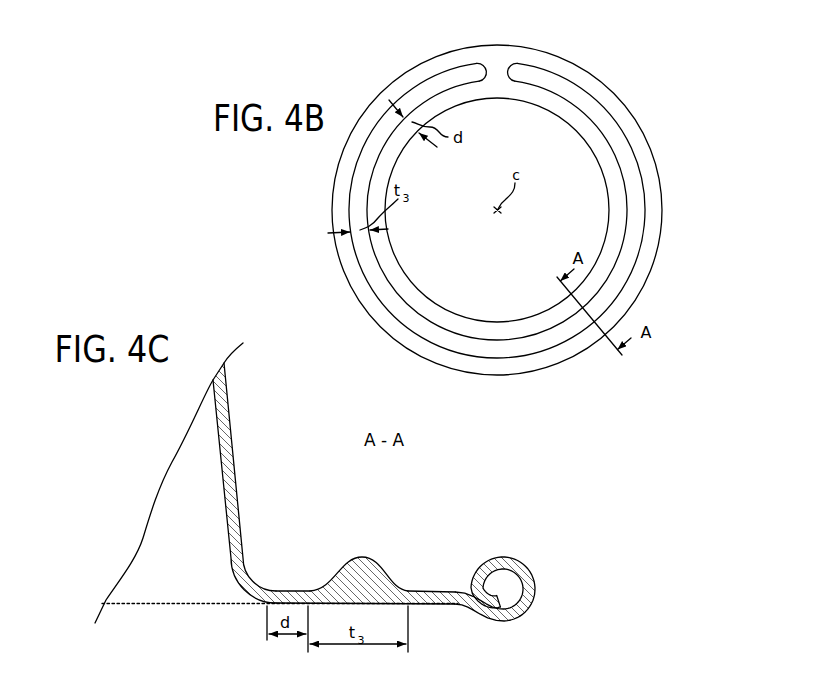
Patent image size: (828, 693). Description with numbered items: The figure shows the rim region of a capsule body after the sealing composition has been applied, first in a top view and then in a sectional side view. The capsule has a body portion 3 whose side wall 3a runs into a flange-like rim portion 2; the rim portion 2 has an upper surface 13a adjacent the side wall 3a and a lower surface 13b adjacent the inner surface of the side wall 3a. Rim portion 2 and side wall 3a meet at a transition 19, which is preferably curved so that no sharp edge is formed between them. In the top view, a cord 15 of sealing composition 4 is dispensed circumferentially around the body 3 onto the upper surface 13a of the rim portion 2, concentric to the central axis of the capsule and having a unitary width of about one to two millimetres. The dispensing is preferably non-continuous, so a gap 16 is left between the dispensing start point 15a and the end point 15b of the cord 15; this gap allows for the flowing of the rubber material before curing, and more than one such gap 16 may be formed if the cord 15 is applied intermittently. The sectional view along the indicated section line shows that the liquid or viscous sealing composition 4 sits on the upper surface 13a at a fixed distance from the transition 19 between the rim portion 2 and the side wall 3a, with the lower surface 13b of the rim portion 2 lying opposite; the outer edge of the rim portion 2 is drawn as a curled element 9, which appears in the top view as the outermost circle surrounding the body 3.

In FIG. 4B, the rim portion 2 is at (357, 292).
In FIG. 4C, the rim portion 2 is at (430, 592).
In FIG. 4B, the body portion 3 is at (578, 130).
In FIG. 4C, the body portion 3 is at (229, 400).
In FIG. 4C, the side wall 3a is at (234, 452).
In FIG. 4B, the sealing composition 4 is at (639, 228).
In FIG. 4C, the sealing composition 4 is at (362, 560).
In FIG. 4B, the curl 9 is at (636, 113).
In FIG. 4C, the curl 9 is at (535, 583).
In FIG. 4B, the upper surface 13a is at (645, 273).
In FIG. 4C, the upper surface 13a is at (290, 591).
In FIG. 4C, the lower surface 13b is at (438, 605).
In FIG. 4B, the cord 15 is at (641, 205).
In FIG. 4B, the dispensing start point 15a is at (485, 68).
In FIG. 4B, the end point 15b is at (507, 68).
In FIG. 4B, the gap 16 is at (497, 74).
In FIG. 4C, the transition 19 is at (240, 604).